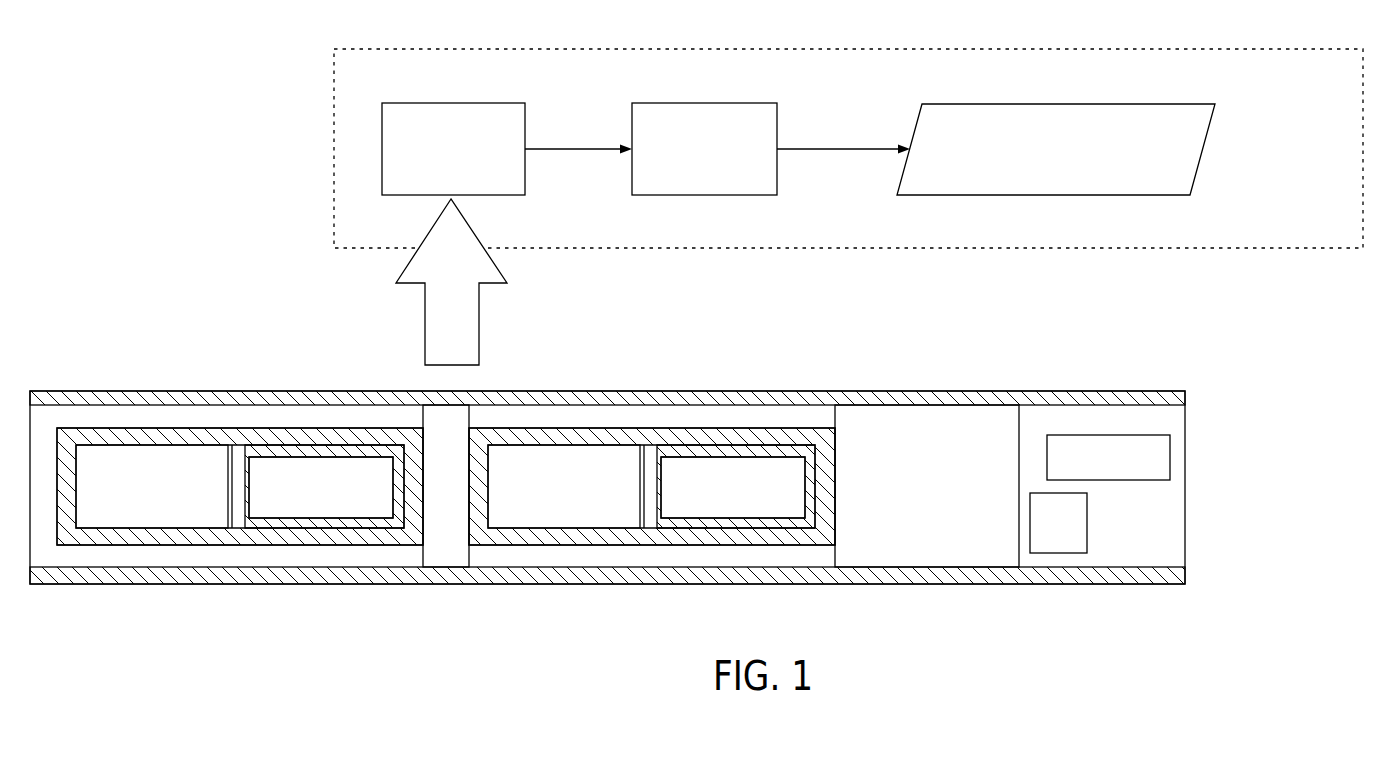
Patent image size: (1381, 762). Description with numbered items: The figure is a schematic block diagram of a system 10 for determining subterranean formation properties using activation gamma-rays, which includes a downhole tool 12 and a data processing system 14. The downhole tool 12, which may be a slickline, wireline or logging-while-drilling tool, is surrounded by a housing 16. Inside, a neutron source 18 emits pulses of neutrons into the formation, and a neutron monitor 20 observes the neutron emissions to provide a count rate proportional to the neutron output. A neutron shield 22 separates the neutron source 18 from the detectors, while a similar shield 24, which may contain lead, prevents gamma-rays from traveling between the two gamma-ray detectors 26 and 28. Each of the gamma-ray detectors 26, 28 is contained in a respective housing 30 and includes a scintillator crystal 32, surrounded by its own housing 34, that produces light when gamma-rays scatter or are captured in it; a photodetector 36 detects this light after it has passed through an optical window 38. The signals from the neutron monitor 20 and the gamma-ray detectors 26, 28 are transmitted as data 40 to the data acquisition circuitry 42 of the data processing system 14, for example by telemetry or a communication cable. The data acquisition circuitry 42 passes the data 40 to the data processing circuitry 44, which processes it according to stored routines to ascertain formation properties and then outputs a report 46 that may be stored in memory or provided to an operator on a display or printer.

The system 10 is at (236, 662).
The downhole tool 12 is at (607, 516).
The data processing system 14 is at (655, 40).
The housing 16 is at (1062, 579).
The neutron source 18 is at (1170, 455).
The neutron monitor 20 is at (1087, 528).
The neutron shield 22 is at (955, 417).
The shield 24 is at (458, 422).
The gamma-ray detector 26 is at (760, 418).
The gamma-ray detector 28 is at (242, 415).
The housing 30 is at (160, 433).
The scintillator crystal 32 is at (300, 510).
The housing 34 is at (325, 527).
The photodetector 36 is at (110, 455).
The optical window 38 is at (238, 503).
The data 40 is at (479, 330).
The data acquisition circuitry 42 is at (469, 103).
The data processing circuitry 44 is at (704, 103).
The report 46 is at (1027, 104).